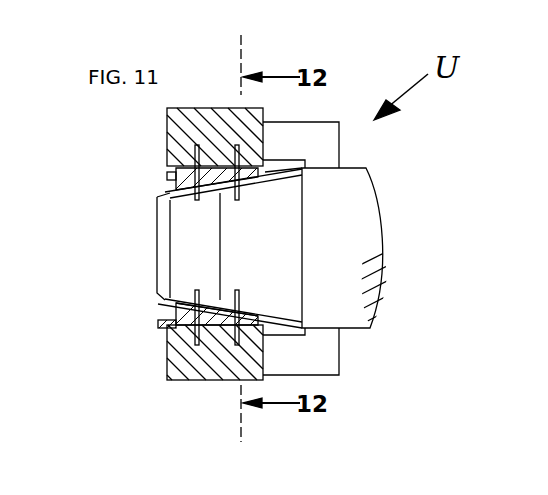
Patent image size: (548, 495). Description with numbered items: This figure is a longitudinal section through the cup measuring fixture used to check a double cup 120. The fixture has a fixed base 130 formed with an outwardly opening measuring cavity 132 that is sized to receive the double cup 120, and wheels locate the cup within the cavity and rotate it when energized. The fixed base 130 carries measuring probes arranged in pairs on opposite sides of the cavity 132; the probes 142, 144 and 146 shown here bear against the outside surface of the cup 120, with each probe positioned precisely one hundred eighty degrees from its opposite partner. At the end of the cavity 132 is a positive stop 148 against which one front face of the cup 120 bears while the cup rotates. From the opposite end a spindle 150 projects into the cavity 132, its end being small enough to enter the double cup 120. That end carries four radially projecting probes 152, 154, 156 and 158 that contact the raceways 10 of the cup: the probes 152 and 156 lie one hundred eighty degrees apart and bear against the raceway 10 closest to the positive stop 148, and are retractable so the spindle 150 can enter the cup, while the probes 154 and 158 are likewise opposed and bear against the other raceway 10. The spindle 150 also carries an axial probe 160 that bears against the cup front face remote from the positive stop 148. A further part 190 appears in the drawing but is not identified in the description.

The raceway 10 is at (198, 310).
The double cup 120 is at (175, 222).
The fixed base 130 is at (203, 122).
The measuring cavity 132 is at (264, 326).
The measuring probe 142 is at (266, 124).
The measuring probe 144 is at (167, 340).
The measuring probe 146 is at (236, 343).
The positive stop 148 is at (157, 323).
The spindle 150 is at (346, 260).
The measuring probe 152 is at (173, 178).
The measuring probe 154 is at (233, 174).
The measuring probe 156 is at (172, 316).
The measuring probe 158 is at (243, 314).
The axial probe 160 is at (282, 176).
The upper bolt 190 is at (195, 148).